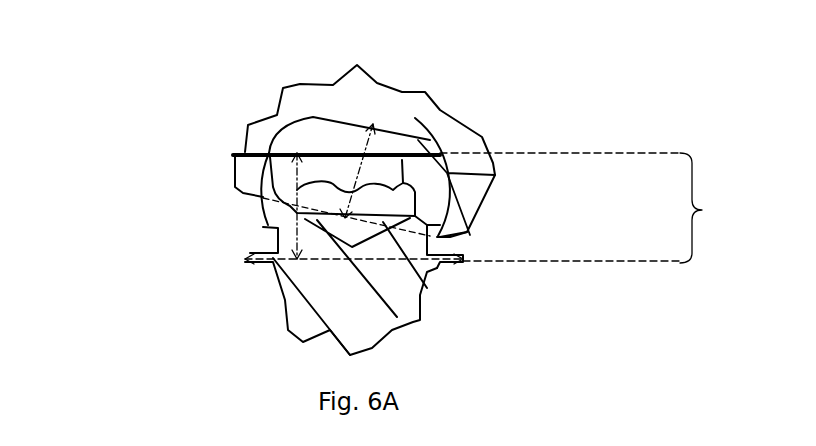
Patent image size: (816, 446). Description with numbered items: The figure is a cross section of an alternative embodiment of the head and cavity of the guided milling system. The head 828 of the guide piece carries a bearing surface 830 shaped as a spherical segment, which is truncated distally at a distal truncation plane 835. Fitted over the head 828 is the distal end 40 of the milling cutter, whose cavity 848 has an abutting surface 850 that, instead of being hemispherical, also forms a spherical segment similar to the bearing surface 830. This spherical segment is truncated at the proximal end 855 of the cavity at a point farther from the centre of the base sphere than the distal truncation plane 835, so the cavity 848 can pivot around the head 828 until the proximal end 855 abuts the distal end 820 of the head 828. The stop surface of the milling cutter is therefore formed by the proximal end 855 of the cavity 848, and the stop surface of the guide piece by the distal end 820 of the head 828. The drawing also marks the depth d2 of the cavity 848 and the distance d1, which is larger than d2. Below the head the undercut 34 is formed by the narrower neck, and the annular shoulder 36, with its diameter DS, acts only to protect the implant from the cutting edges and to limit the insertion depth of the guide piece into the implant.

The cavity 848 is at (322, 132).
The proximal end of the cavity 855 is at (340, 120).
The distal end of the head 820 is at (435, 132).
The abutting surface 850 is at (462, 128).
The distal truncation plane 835 is at (233, 152).
The bearing surface 830 is at (297, 212).
The annular shoulder 36 is at (243, 255).
The undercut 34 is at (278, 228).
The distal end 40 is at (440, 237).
The distance between coronal end of guide piece and stop surface d1 is at (283, 212).
The depth of the inner cavity d2 is at (355, 180).
The diameter of the annular shoulder DS is at (395, 258).
The head 828 is at (601, 208).